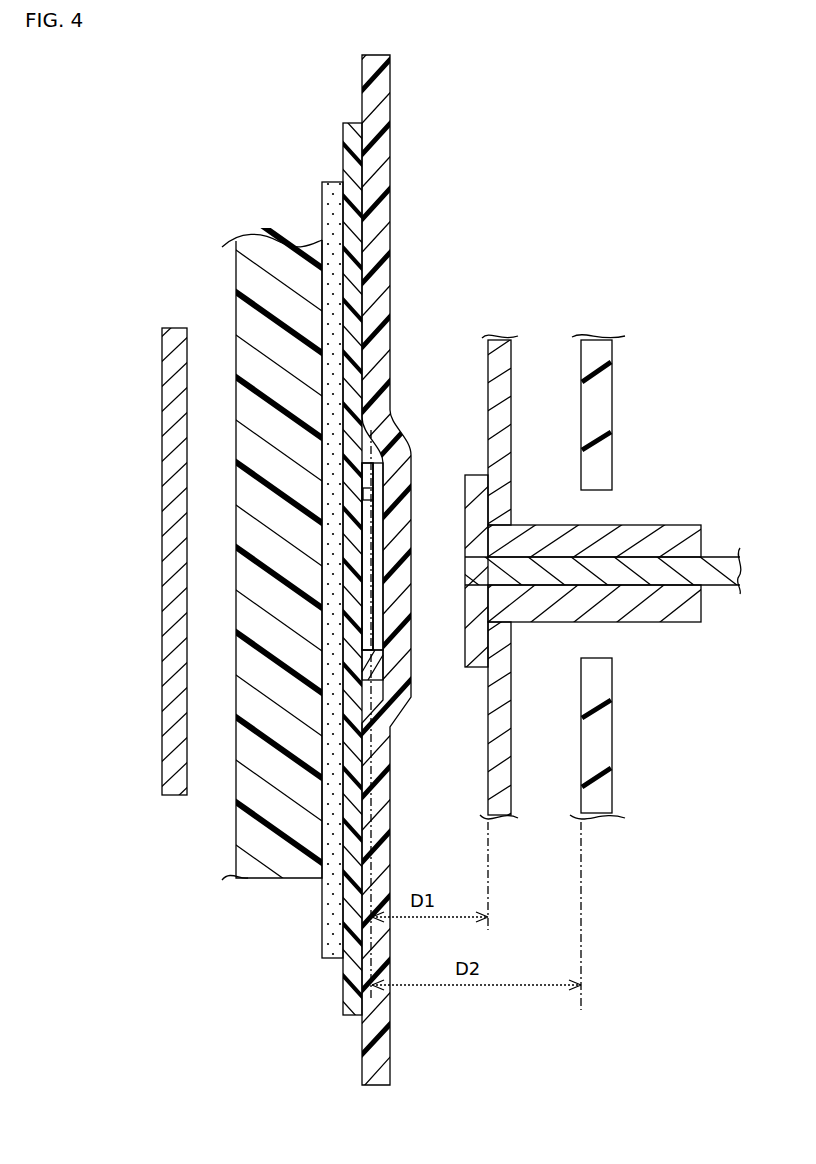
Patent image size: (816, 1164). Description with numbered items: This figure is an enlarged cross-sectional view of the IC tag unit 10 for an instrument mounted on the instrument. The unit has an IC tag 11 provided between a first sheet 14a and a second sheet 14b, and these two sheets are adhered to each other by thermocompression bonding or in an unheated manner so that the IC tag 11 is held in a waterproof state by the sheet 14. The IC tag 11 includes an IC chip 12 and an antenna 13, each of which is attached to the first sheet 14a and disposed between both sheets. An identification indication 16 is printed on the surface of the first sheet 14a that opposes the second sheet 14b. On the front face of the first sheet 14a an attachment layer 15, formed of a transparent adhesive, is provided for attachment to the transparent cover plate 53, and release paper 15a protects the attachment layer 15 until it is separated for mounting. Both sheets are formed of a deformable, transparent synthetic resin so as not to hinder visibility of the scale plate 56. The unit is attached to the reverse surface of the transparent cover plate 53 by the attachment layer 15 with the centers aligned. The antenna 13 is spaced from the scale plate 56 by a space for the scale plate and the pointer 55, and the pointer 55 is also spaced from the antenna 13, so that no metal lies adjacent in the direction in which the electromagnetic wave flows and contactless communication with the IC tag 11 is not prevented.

The IC tag unit for an instrument 10 is at (400, 128).
The IC tag 11 is at (327, 1012).
The IC chip 12 is at (413, 635).
The antenna 13 is at (365, 700).
The sheet 14 is at (200, 42).
The first sheet 14a is at (343, 145).
The second sheet 14b is at (361, 72).
The attachment layer 15 is at (322, 202).
The release paper 15a is at (161, 762).
The identification indication 16 is at (355, 565).
The transparent cover plate 53 is at (236, 852).
The pointer 55 is at (495, 335).
The scale plate 56 is at (617, 403).